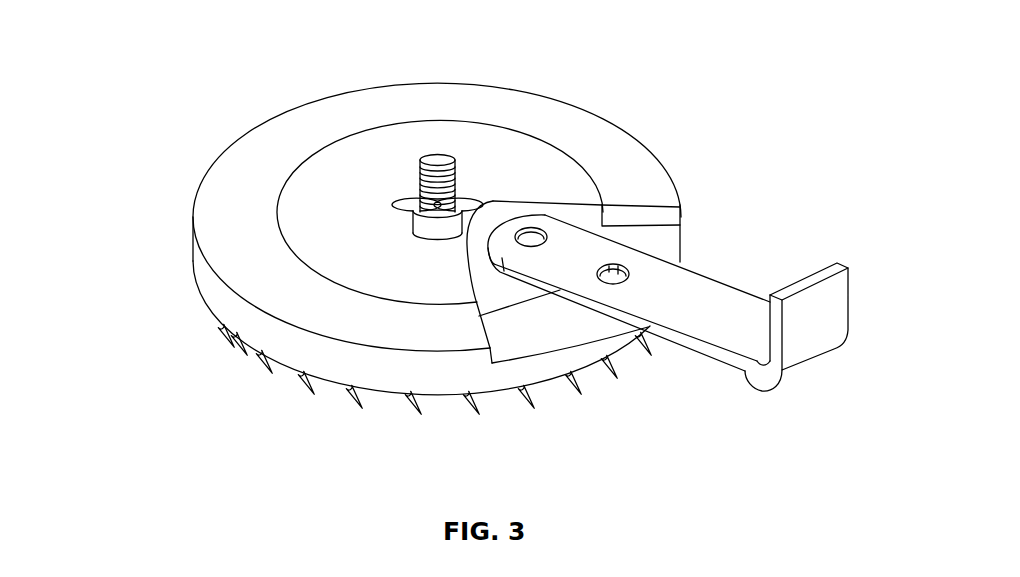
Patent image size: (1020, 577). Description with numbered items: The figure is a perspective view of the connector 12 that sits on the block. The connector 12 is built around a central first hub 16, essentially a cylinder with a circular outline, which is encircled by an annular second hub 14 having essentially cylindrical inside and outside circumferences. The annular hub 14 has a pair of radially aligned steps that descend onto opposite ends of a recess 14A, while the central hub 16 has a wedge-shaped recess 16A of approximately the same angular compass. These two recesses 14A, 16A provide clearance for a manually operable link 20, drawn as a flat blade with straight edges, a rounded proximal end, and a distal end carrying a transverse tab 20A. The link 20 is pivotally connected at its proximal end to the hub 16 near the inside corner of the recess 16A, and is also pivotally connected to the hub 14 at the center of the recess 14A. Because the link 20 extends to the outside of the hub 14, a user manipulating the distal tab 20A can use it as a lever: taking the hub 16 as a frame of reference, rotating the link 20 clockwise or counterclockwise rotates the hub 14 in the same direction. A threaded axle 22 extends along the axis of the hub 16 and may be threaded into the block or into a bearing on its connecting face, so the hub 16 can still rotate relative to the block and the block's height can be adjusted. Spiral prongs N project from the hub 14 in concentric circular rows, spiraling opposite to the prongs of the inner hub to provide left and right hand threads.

The connector 12 is at (188, 70).
The annular second hub 14 is at (581, 120).
The recess 14A is at (653, 248).
The central first hub 16 is at (305, 233).
The wedge-shaped recess 16A is at (493, 295).
The manually operable link 20 is at (720, 360).
The transverse tab 20A is at (800, 338).
The threaded axle 22 is at (420, 203).
The spiral prongs N is at (305, 380).